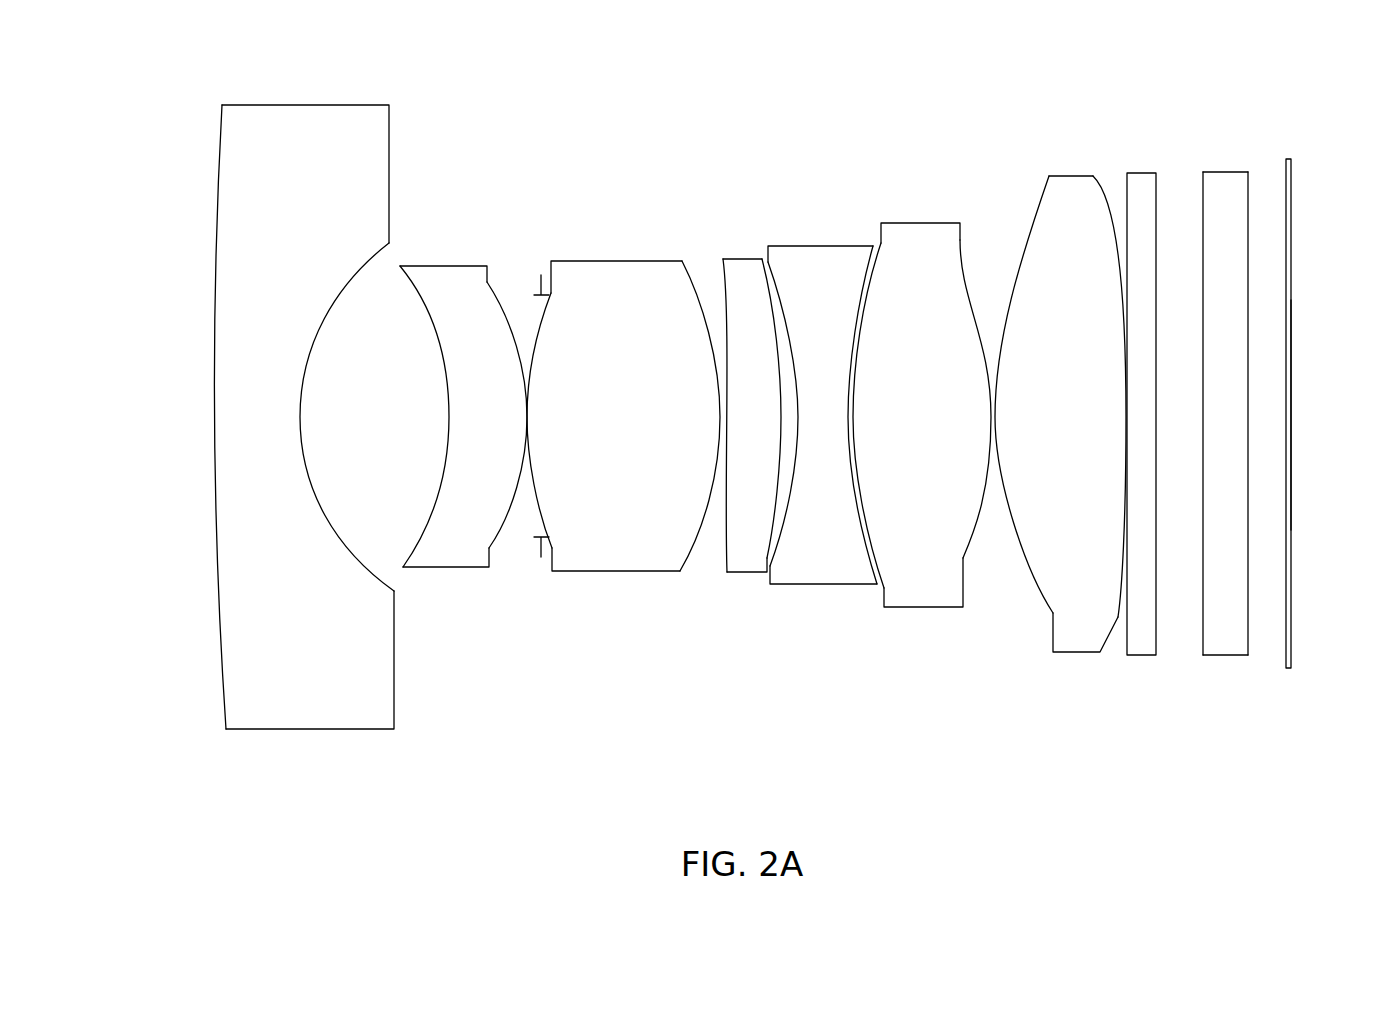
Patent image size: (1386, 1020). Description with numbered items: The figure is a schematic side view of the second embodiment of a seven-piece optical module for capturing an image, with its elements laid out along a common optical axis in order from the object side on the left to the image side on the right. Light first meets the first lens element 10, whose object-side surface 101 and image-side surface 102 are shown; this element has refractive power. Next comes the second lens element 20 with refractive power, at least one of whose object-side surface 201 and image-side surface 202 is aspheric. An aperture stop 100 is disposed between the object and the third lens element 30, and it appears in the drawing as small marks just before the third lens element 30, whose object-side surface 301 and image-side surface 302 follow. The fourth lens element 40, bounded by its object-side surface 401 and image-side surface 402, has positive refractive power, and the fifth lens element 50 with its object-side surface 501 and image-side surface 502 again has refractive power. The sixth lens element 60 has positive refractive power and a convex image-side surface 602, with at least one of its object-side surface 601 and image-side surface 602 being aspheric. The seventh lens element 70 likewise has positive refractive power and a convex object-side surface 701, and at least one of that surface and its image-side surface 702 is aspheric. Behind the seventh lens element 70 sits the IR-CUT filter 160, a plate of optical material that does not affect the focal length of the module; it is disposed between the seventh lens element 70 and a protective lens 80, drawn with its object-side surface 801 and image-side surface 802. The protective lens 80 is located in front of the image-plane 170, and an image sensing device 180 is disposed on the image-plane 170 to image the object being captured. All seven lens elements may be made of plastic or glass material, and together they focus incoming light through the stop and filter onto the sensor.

The first lens element 10 is at (312, 105).
The object-side surface of first lens element 101 is at (226, 667).
The image-side surface of first lens element 102 is at (395, 688).
The second lens element 20 is at (457, 266).
The object-side surface of second lens element 201 is at (418, 540).
The image-side surface of second lens element 202 is at (494, 552).
The aperture stop 100 is at (542, 281).
The third lens element 30 is at (610, 261).
The object-side surface of third lens element 301 is at (560, 548).
The image-side surface of third lens element 302 is at (693, 545).
The fourth lens element 40 is at (740, 259).
The object-side surface of fourth lens element 401 is at (727, 545).
The image-side surface of fourth lens element 402 is at (767, 550).
The fifth lens element 50 is at (818, 246).
The object-side surface of fifth lens element 501 is at (777, 545).
The image-side surface of fifth lens element 502 is at (862, 545).
The sixth lens element 60 is at (922, 223).
The object-side surface of sixth lens element 601 is at (876, 560).
The image-side surface of sixth lens element 602 is at (963, 555).
The seventh lens element 70 is at (1069, 176).
The object-side surface of seventh lens element 701 is at (1050, 612).
The image-side surface of seventh lens element 702 is at (1117, 618).
The IR-CUT filter 160 is at (1139, 173).
The protective lens 80 is at (1224, 172).
The object-side surface of protective lens 801 is at (1203, 243).
The image-side surface of protective lens 802 is at (1252, 338).
The image sensing device 180 is at (1288, 159).
The image-plane 170 is at (1292, 413).